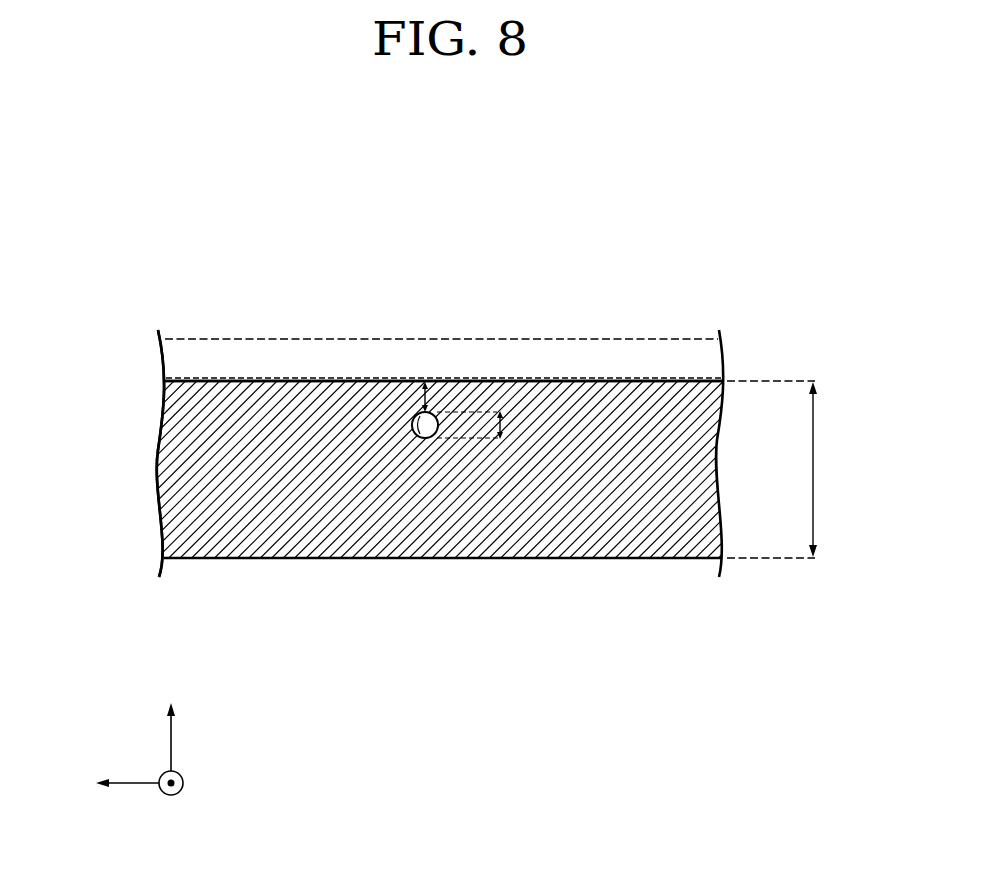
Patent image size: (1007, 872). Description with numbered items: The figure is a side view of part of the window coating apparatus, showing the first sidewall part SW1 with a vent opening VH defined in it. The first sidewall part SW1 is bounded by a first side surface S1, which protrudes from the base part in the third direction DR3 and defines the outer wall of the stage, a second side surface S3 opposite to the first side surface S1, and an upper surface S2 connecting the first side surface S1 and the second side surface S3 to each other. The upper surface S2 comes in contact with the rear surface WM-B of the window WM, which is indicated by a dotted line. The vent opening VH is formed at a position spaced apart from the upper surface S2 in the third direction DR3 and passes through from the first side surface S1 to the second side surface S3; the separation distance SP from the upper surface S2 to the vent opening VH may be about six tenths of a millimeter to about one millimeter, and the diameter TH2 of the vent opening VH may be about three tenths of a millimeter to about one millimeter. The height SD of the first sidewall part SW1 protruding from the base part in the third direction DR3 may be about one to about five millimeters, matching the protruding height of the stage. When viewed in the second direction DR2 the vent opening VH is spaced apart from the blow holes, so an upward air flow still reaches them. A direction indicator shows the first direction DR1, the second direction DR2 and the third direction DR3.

The window WM is at (708, 360).
The rear surface of the window WM-B is at (292, 381).
The separation distance SP is at (433, 388).
The first side surface S1 is at (530, 524).
The upper surface S2 is at (524, 379).
The second side surface S3 is at (187, 478).
The vent opening VH is at (413, 432).
The diameter of the vent opening TH2 is at (483, 410).
The height of the first sidewall part SD is at (786, 469).
The first sidewall part SW1 is at (662, 300).
The first direction DR1 is at (105, 785).
The second direction DR2 is at (171, 799).
The third direction DR3 is at (171, 723).